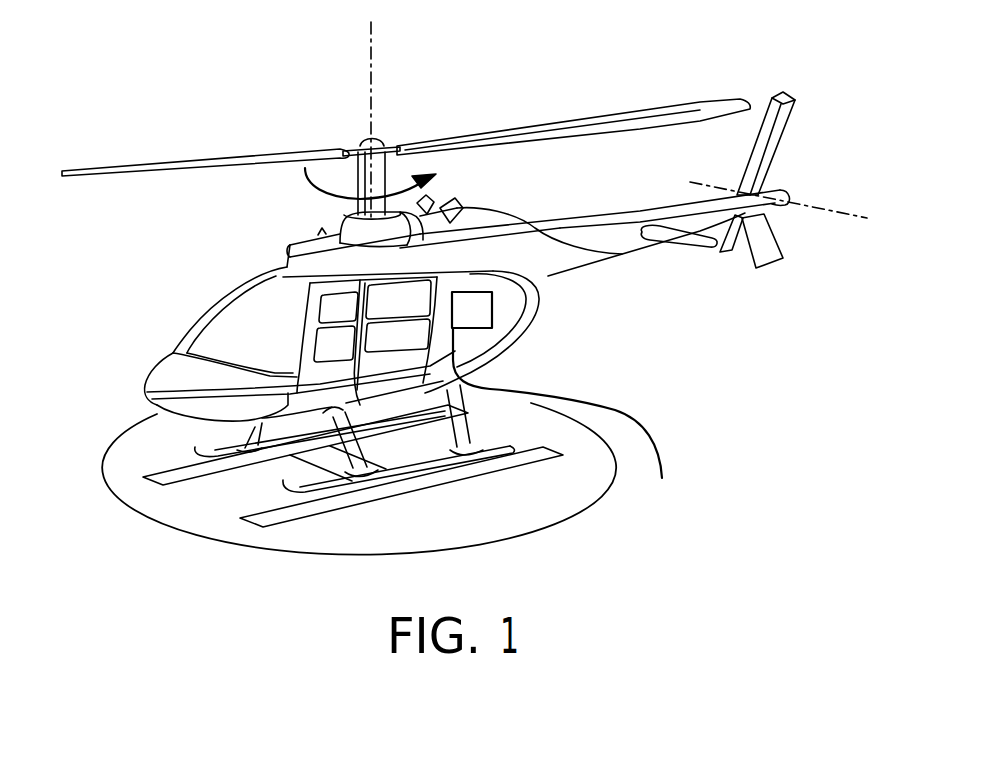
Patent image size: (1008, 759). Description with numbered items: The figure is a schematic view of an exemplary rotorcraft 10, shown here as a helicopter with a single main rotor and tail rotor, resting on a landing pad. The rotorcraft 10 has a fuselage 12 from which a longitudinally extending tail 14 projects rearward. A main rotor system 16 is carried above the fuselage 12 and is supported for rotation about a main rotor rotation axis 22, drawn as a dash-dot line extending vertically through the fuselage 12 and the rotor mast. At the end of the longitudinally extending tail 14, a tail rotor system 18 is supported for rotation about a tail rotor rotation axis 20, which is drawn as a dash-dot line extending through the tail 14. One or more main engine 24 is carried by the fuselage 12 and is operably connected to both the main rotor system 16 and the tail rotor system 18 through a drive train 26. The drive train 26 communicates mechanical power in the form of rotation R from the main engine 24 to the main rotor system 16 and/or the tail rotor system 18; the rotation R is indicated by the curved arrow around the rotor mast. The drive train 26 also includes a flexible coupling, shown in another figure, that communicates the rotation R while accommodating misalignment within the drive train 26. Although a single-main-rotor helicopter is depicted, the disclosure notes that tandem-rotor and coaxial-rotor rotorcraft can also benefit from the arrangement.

The rotorcraft 10 is at (146, 543).
The fuselage 12 is at (474, 333).
The longitudinally extending tail 14 is at (603, 242).
The main rotor system 16 is at (555, 108).
The tail rotor system 18 is at (736, 258).
The tail rotor rotation axis 20 is at (821, 200).
The main rotor rotation axis 22 is at (372, 73).
The main engine 24 is at (463, 209).
The drive train 26 is at (564, 421).
The rotation R is at (330, 190).